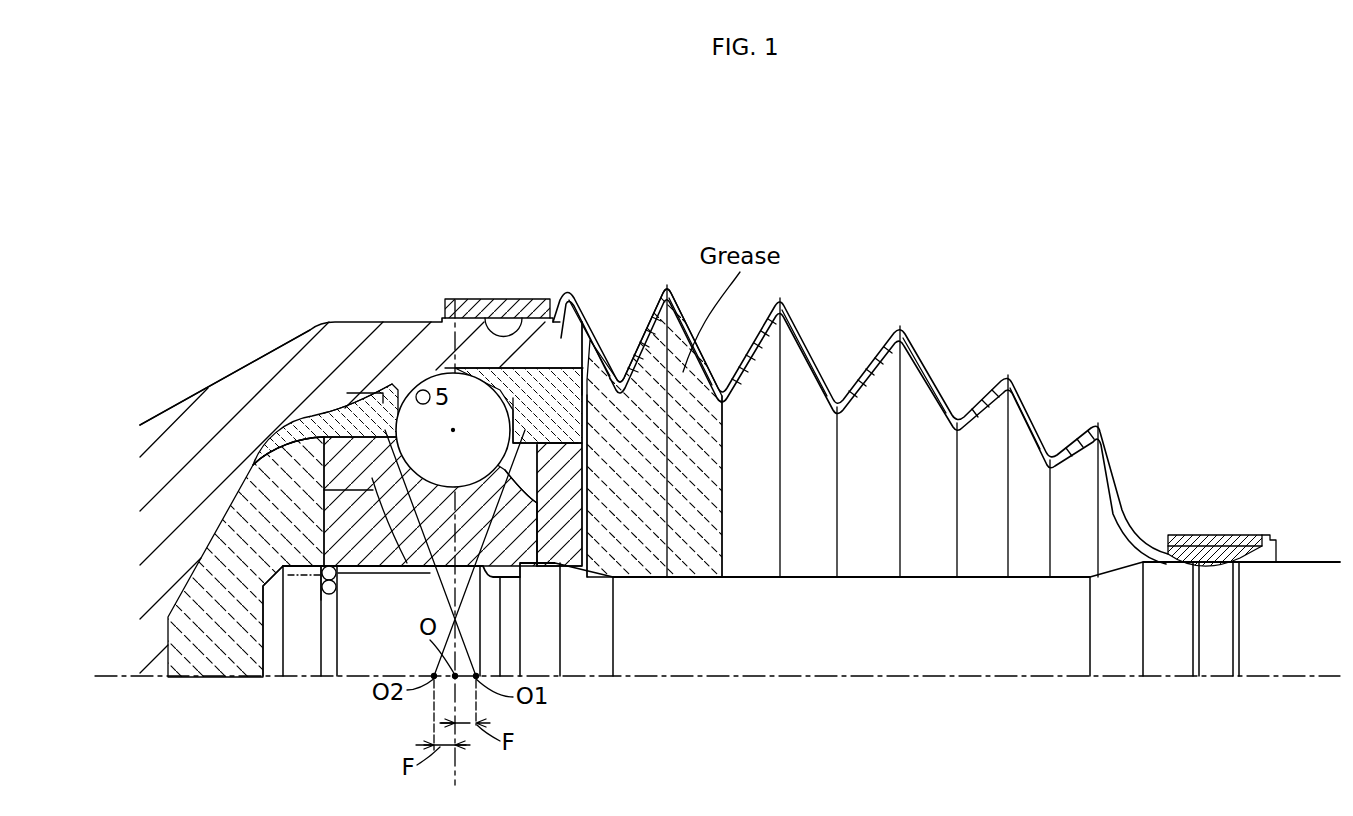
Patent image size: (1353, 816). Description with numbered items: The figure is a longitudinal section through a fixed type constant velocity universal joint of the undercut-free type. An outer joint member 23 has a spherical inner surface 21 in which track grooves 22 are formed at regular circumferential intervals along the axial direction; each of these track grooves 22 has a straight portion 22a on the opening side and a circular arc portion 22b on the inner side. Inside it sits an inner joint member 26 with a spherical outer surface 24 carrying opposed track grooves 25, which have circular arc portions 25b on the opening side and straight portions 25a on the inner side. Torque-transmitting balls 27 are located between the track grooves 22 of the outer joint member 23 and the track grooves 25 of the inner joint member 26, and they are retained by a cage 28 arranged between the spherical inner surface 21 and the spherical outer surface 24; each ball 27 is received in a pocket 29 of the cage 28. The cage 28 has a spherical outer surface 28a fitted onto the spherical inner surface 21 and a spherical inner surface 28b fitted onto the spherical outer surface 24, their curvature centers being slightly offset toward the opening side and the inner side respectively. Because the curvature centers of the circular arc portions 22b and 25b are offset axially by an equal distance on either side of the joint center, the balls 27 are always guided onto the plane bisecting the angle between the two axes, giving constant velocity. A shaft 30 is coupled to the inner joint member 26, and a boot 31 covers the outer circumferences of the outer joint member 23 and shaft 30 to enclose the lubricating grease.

The spherical inner surface 21 is at (327, 470).
The track grooves 22 is at (585, 456).
The straight portions 22a is at (583, 395).
The circular arc portions 22b is at (335, 410).
The outer joint member 23 is at (495, 372).
The spherical outer surface 24 is at (405, 480).
The track grooves 25 is at (497, 491).
The straight portions 25a is at (325, 515).
The circular arc portions 25b is at (500, 507).
The inner joint member 26 is at (542, 538).
The balls 27 is at (467, 397).
The cage 28 is at (527, 373).
The spherical outer surface 28a is at (330, 400).
The spherical inner surface 28b is at (386, 566).
The pocket 29 is at (506, 330).
The shaft 30 is at (1290, 600).
The boot 31 is at (923, 333).